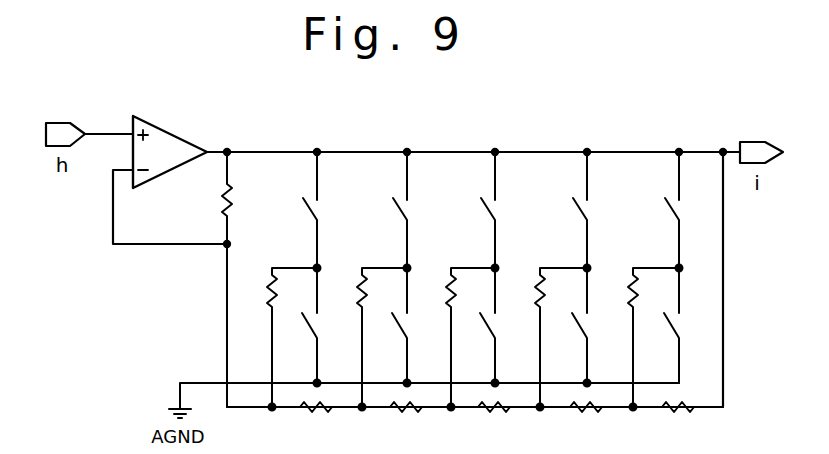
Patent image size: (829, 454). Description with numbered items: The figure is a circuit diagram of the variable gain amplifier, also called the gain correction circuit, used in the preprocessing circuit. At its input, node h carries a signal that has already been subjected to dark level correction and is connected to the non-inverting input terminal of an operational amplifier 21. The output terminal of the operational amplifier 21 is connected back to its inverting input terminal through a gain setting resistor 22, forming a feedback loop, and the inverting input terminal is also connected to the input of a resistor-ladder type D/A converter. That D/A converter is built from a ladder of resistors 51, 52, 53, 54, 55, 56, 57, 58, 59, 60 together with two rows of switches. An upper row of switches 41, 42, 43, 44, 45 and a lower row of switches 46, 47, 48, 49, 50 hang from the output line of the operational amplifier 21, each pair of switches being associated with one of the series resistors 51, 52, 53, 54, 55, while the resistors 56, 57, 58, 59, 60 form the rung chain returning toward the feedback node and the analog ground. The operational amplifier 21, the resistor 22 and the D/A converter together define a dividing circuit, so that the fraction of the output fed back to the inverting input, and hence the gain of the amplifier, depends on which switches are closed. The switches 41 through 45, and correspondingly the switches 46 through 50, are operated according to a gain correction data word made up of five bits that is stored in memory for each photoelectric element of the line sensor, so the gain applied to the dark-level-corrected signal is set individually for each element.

The operational amplifier 21 is at (175, 134).
The gain setting resistor 22 is at (234, 190).
The switch 41 is at (303, 215).
The switch 42 is at (393, 215).
The switch 43 is at (481, 215).
The switch 44 is at (573, 215).
The switch 45 is at (665, 215).
The switch 46 is at (305, 330).
The switch 47 is at (395, 330).
The switch 48 is at (483, 330).
The switch 49 is at (575, 330).
The switch 50 is at (667, 330).
The resistor 51 is at (262, 290).
The resistor 52 is at (352, 290).
The resistor 53 is at (441, 290).
The resistor 54 is at (530, 290).
The resistor 55 is at (623, 290).
The resistor 56 is at (312, 413).
The resistor 57 is at (402, 413).
The resistor 58 is at (490, 413).
The resistor 59 is at (582, 413).
The resistor 60 is at (674, 413).